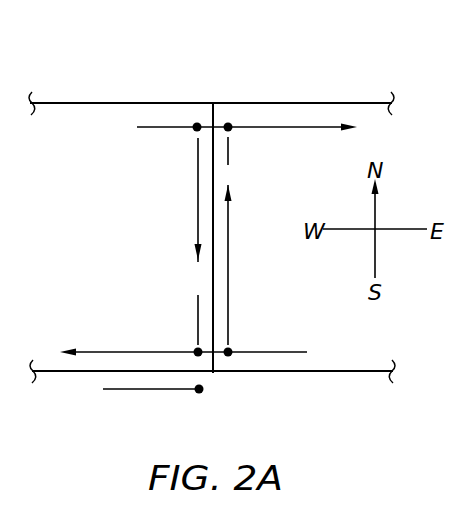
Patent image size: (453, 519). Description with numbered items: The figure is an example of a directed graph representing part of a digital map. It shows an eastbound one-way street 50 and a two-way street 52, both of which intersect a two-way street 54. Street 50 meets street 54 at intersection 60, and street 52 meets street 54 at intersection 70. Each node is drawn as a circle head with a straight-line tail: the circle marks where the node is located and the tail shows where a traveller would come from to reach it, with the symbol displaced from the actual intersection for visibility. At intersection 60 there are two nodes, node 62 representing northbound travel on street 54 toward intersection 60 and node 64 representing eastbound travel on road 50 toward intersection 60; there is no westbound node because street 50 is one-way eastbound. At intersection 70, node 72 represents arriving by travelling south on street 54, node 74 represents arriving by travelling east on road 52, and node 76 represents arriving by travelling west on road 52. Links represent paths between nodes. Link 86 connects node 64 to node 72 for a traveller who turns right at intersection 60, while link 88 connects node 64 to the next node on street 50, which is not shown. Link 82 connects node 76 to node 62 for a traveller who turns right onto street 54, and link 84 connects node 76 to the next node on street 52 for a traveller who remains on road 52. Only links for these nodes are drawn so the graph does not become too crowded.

The eastbound one-way street 50 is at (321, 103).
The two-way street 52 is at (330, 371).
The two-way street 54 is at (214, 245).
The intersection 60 is at (213, 103).
The node 62 is at (230, 140).
The node 64 is at (157, 128).
The intersection 70 is at (214, 373).
The node 72 is at (196, 318).
The node 74 is at (148, 390).
The node 76 is at (277, 352).
The link 82 is at (230, 300).
The link 84 is at (108, 350).
The link 86 is at (197, 187).
The link 88 is at (315, 128).